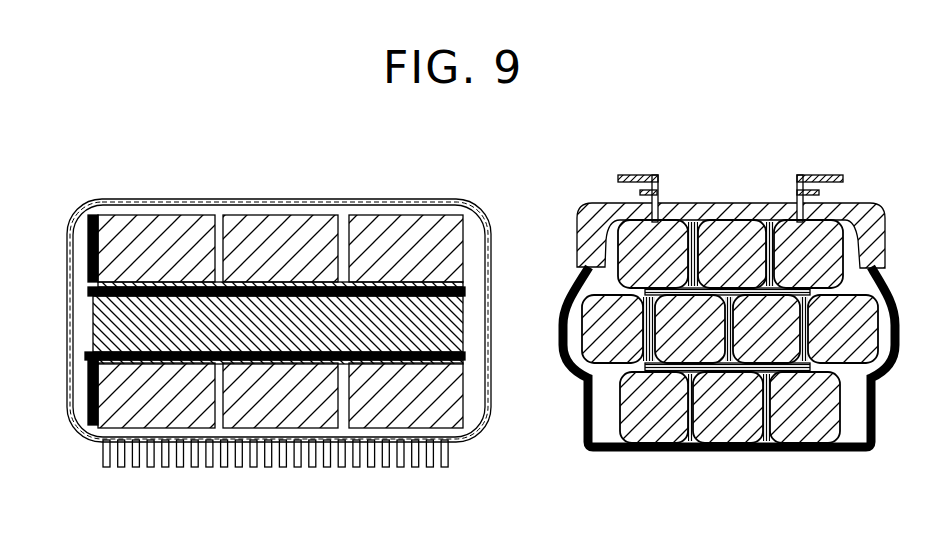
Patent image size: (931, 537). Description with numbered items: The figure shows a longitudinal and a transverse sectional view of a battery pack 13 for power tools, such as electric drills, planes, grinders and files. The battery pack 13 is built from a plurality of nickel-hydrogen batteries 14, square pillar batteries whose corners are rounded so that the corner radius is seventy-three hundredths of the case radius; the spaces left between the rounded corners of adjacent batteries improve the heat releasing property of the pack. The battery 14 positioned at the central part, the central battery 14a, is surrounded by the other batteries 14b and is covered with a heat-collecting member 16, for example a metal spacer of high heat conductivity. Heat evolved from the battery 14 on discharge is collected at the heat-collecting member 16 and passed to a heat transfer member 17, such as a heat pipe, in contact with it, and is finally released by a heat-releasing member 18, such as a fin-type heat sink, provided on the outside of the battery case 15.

The battery pack 13 is at (411, 199).
The nickel-hydrogen battery 14 is at (442, 247).
The central battery 14a is at (697, 333).
The other batteries 14b is at (653, 413).
The battery case 15 is at (442, 327).
The heat-collecting member 16 is at (482, 373).
The heat transfer member 17 is at (92, 377).
The heat-releasing member 18 is at (100, 452).